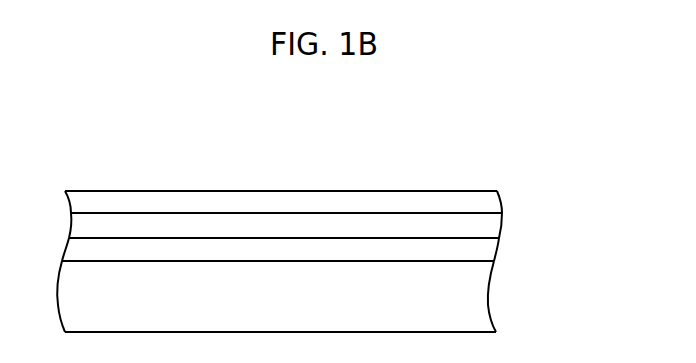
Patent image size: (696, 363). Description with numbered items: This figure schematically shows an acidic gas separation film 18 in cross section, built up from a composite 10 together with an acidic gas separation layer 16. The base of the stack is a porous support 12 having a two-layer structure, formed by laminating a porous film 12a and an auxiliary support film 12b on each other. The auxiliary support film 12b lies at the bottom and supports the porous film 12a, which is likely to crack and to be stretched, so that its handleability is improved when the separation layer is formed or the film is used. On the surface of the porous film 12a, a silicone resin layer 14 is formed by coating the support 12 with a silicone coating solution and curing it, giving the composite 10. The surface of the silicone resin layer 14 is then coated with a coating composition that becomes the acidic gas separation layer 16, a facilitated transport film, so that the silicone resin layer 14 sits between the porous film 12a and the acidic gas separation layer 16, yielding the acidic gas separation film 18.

The composite 10 is at (369, 221).
The porous support 12 is at (344, 284).
The porous film 12a is at (479, 250).
The auxiliary support film 12b is at (479, 300).
The silicone resin layer 14 is at (490, 224).
The acidic gas separation layer 16 is at (452, 200).
The acidic gas separation film 18 is at (340, 154).